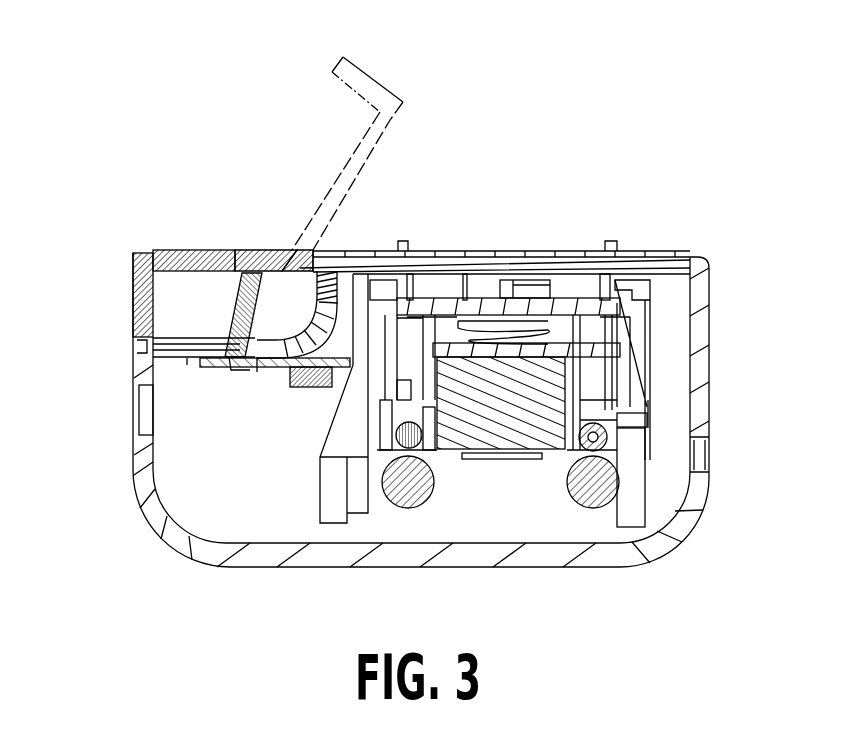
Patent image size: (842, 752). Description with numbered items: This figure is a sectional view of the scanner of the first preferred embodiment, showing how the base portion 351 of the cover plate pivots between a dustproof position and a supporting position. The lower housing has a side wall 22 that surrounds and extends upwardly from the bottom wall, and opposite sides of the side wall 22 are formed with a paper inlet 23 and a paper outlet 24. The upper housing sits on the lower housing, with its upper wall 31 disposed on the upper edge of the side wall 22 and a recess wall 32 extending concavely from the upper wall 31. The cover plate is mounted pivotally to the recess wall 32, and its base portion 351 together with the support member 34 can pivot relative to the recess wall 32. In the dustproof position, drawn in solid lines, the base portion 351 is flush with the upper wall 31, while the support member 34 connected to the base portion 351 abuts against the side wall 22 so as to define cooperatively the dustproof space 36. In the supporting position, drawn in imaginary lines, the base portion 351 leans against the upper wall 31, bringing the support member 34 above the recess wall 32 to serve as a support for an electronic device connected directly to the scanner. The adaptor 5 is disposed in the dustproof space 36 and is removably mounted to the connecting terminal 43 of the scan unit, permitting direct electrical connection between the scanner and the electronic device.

The support member 34 is at (358, 64).
The base portion 351 is at (360, 175).
The adaptor 5 is at (266, 280).
The connecting terminal 43 is at (224, 300).
The upper wall 31 is at (553, 265).
The dustproof space 36 is at (167, 318).
The side wall 22 is at (140, 360).
The paper inlet 23 is at (138, 417).
The recess wall 32 is at (187, 360).
The paper outlet 24 is at (707, 449).